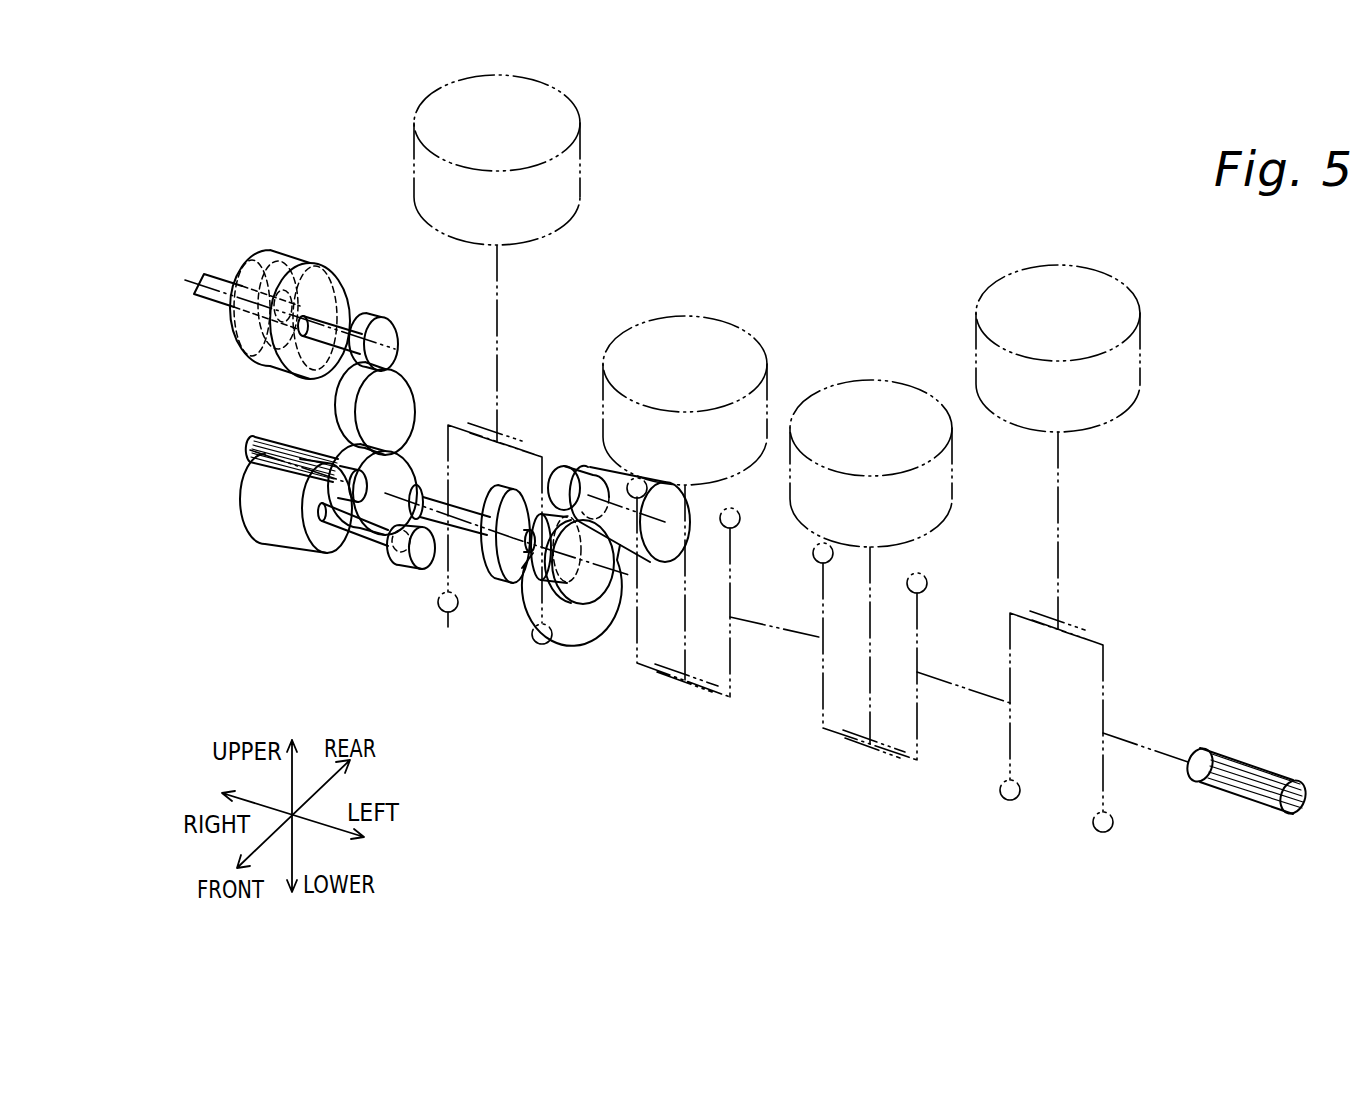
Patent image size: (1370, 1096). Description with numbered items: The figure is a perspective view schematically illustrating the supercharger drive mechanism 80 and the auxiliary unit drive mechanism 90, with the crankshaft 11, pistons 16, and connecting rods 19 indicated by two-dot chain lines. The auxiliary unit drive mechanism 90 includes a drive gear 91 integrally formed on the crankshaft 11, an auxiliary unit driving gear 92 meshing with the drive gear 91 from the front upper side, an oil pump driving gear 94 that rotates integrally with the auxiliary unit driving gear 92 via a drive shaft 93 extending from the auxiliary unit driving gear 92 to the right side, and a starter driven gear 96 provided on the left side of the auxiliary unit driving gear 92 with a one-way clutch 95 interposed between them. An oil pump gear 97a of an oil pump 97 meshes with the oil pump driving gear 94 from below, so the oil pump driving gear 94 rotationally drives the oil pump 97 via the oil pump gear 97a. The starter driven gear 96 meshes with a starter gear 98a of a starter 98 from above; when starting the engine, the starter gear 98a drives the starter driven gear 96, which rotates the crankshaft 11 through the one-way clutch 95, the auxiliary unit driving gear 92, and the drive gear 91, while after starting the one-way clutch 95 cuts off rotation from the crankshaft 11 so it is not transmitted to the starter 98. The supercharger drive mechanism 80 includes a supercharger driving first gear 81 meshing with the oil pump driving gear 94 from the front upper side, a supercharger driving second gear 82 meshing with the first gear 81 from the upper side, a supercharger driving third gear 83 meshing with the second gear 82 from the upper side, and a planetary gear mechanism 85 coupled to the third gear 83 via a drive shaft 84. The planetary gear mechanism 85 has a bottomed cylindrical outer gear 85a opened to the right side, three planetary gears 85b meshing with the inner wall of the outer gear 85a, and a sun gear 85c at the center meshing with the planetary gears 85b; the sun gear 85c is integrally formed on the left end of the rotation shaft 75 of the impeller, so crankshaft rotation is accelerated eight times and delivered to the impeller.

The crankshaft 11 is at (940, 677).
The pistons 16 is at (1140, 345).
The connecting rods 19 is at (1058, 500).
The rotation shaft 75 is at (212, 306).
The supercharger drive mechanism 80 is at (320, 420).
The supercharger driving first gear 81 is at (352, 520).
The supercharger driving second gear 82 is at (398, 392).
The supercharger driving third gear 83 is at (387, 312).
The drive shaft 84 is at (347, 303).
The planetary gear mechanism 85 is at (264, 302).
The outer gear 85a is at (262, 272).
The planetary gears 85b is at (230, 345).
The sun gear 85c is at (275, 370).
The auxiliary unit drive mechanism 90 is at (574, 650).
The drive gear 91 is at (587, 627).
The auxiliary unit driving gear 92 is at (488, 573).
The drive shaft 93 is at (463, 530).
The oil pump driving gear 94 is at (420, 463).
The one-way clutch 95 is at (523, 572).
The starter driven gear 96 is at (597, 590).
The oil pump 97 is at (277, 527).
The oil pump gear 97a is at (393, 567).
The starter 98 is at (665, 527).
The starter gear 98a is at (576, 466).